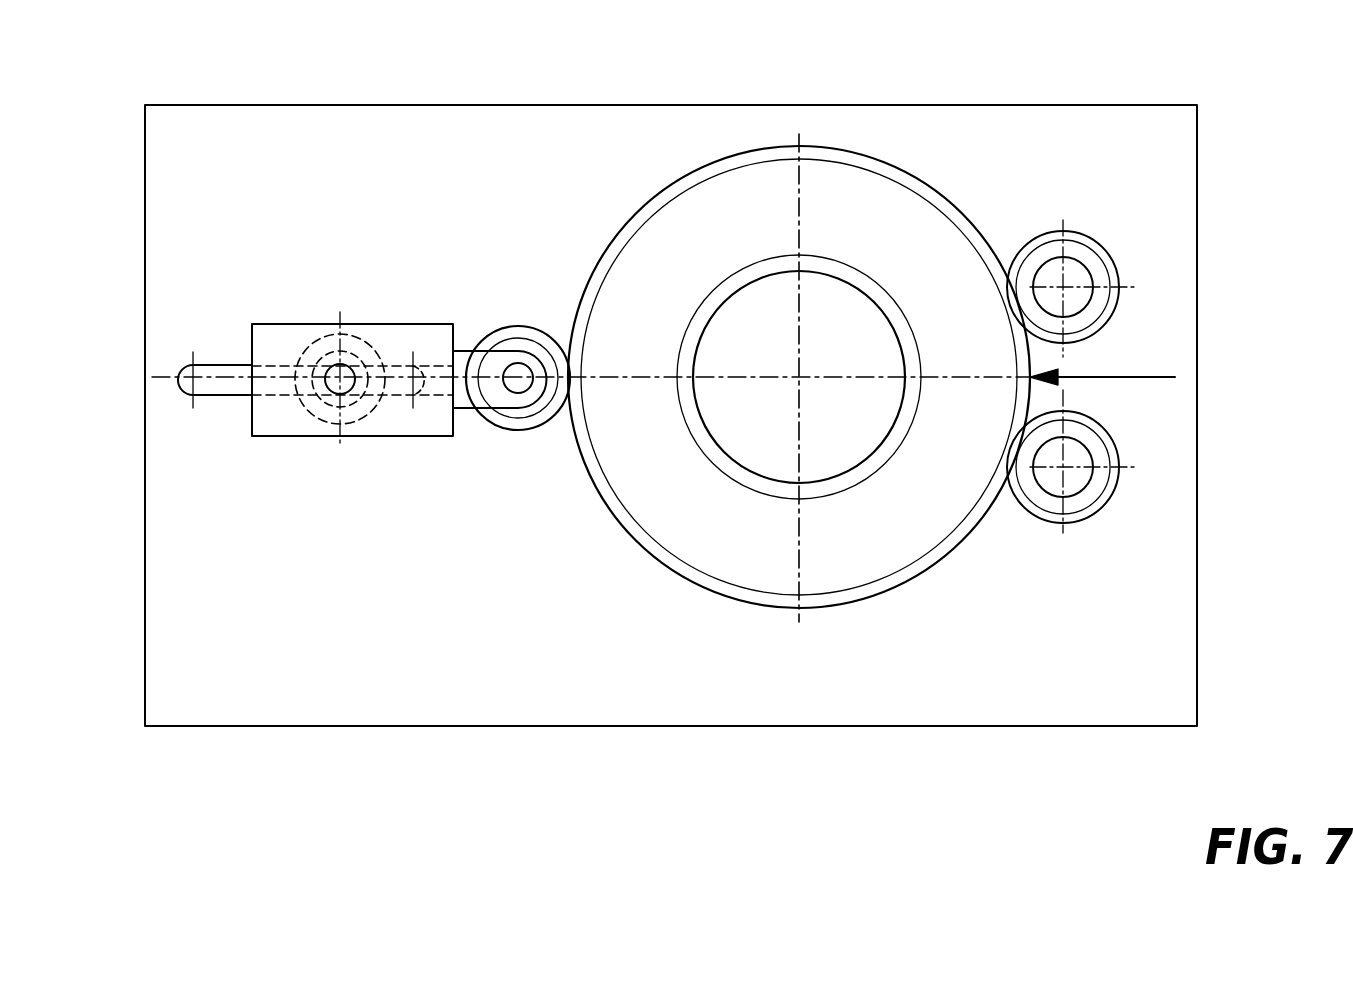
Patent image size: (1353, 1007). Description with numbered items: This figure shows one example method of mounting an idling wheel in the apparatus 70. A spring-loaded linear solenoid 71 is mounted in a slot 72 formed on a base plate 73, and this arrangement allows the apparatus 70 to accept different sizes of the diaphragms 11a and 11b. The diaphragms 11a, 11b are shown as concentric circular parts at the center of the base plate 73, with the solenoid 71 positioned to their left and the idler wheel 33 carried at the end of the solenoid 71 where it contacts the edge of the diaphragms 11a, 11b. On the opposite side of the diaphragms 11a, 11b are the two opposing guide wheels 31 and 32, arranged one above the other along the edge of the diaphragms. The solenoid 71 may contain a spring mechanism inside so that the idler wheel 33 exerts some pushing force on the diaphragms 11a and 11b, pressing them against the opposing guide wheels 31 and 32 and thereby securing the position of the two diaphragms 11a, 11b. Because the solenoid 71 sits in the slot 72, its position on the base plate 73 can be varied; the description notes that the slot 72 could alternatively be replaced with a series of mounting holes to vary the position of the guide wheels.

The apparatus 70 is at (711, 380).
The base plate 73 is at (1170, 652).
The diaphragm 11a is at (765, 377).
The diaphragm 11b is at (650, 245).
The guide wheel 31 is at (1088, 432).
The guide wheel 32 is at (1095, 268).
The idler wheel 33 is at (515, 340).
The spring-loaded linear solenoid 71 is at (388, 340).
The slot 72 is at (215, 368).